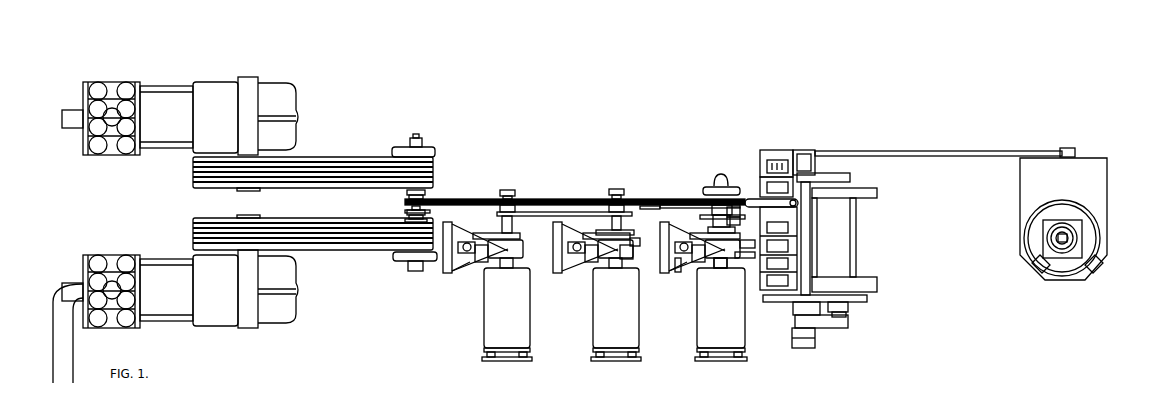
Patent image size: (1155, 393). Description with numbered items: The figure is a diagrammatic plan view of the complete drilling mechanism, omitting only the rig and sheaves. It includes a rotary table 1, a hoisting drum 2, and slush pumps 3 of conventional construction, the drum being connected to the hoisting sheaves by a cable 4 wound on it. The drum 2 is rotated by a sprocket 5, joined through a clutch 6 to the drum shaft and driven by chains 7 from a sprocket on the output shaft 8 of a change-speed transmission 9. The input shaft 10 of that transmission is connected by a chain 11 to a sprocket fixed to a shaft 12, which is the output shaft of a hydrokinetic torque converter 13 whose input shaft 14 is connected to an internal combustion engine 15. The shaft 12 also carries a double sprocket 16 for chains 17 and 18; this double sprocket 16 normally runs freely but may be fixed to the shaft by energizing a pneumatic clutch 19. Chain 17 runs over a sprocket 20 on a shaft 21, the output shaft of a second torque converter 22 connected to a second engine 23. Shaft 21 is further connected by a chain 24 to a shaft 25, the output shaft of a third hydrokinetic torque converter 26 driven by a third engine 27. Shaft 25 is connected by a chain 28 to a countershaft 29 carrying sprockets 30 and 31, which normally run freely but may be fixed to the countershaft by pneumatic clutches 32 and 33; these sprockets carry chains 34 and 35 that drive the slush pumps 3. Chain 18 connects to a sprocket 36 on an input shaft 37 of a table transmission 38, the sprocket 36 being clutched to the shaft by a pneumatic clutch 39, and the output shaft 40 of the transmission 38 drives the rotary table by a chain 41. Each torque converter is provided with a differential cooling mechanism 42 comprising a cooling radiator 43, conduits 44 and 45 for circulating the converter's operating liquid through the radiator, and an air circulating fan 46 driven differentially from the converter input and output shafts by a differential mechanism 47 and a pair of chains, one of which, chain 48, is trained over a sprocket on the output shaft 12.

The rotary table 1 is at (1034, 256).
The hoisting drum 2 is at (843, 229).
The slush pumps 3 is at (212, 84).
The cable 4 is at (857, 252).
The sprocket 5 is at (848, 306).
The clutch 6 is at (846, 314).
The chains 7 is at (800, 316).
The output shaft 8 is at (790, 310).
The change-speed transmission 9 is at (763, 298).
The input shaft 10 is at (738, 228).
The chain 11 is at (736, 218).
The shaft 12 is at (750, 243).
The hydrokinetic torque converter 13 is at (717, 215).
The input shaft 14 is at (745, 260).
The internal combustion engine 15 is at (729, 330).
The double sprocket 16 is at (768, 205).
The chain 17 is at (682, 199).
The chain 18 is at (731, 186).
The pneumatic clutch 19 is at (708, 187).
The sprocket 20 is at (609, 198).
The shaft 21 is at (631, 199).
The second torque converter 22 is at (637, 251).
The second engine 23 is at (621, 308).
The chain 24 is at (572, 212).
The shaft 25 is at (512, 196).
The third hydrokinetic torque converter 26 is at (520, 248).
The third engine 27 is at (508, 319).
The chain 28 is at (477, 199).
The countershaft 29 is at (405, 211).
The sprocket 30 is at (428, 190).
The sprocket 31 is at (430, 215).
The pneumatic clutch 32 is at (434, 150).
The pneumatic clutch 33 is at (430, 272).
The chain 34 is at (346, 157).
The chain 35 is at (346, 250).
The sprocket 36 is at (844, 194).
The input shaft 37 is at (760, 168).
The table transmission 38 is at (772, 150).
The pneumatic clutch 39 is at (808, 207).
The output shaft 40 is at (803, 150).
The chain 41 is at (955, 141).
The differential cooling mechanism 42 is at (469, 276).
The cooling radiator 43 is at (668, 274).
The conduit 44 is at (684, 274).
The conduit 45 is at (654, 213).
The air circulating fan 46 is at (641, 234).
The differential mechanism 47 is at (705, 270).
The chain 48 is at (711, 227).